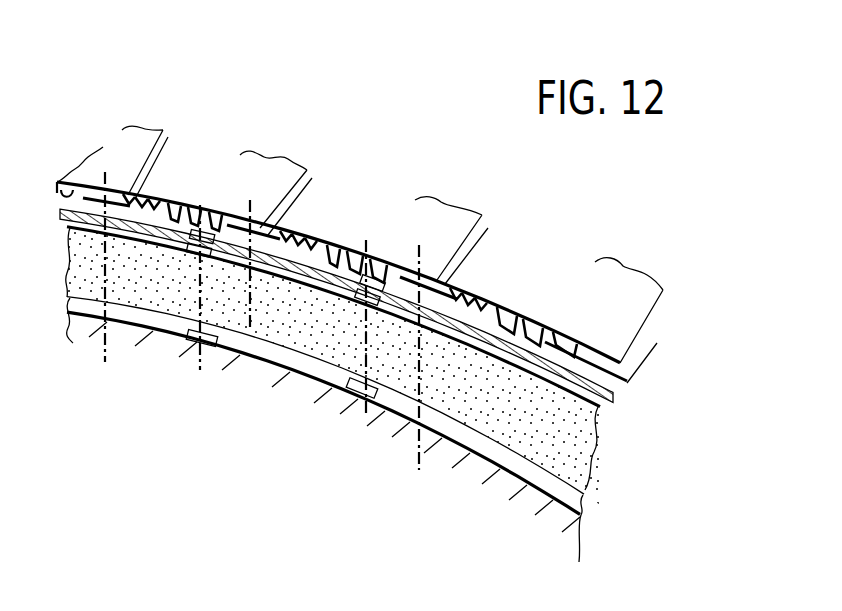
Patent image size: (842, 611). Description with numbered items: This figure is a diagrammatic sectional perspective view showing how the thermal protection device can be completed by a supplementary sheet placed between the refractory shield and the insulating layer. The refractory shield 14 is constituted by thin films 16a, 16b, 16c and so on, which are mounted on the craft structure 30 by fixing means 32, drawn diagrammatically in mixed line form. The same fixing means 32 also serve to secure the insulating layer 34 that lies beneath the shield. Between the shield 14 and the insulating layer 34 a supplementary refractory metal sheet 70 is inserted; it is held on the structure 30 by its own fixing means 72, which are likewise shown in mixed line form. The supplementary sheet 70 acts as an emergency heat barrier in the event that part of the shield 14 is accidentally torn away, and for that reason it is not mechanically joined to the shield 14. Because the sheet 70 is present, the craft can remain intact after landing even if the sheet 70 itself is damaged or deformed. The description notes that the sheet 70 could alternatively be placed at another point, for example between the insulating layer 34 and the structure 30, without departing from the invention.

The refractory shield 14 is at (334, 186).
The thin film 16a is at (643, 283).
The thin film 16b is at (442, 200).
The thin film 16c is at (257, 154).
The supplementary refractory metal sheet 70 is at (615, 402).
The insulating layer 34 is at (578, 437).
The craft structure 30 is at (580, 514).
The fixing means 72 is at (197, 303).
The fixing means 32 is at (253, 343).